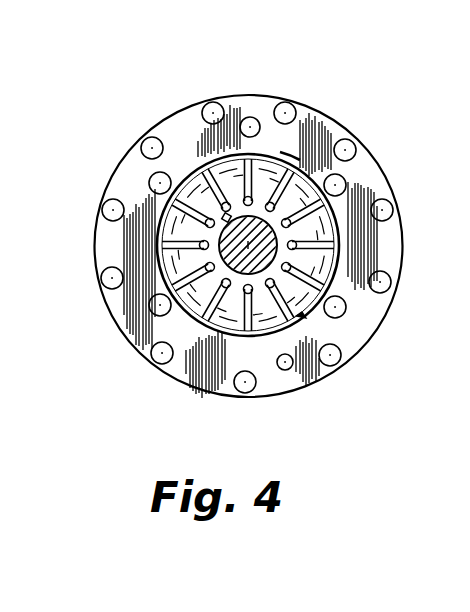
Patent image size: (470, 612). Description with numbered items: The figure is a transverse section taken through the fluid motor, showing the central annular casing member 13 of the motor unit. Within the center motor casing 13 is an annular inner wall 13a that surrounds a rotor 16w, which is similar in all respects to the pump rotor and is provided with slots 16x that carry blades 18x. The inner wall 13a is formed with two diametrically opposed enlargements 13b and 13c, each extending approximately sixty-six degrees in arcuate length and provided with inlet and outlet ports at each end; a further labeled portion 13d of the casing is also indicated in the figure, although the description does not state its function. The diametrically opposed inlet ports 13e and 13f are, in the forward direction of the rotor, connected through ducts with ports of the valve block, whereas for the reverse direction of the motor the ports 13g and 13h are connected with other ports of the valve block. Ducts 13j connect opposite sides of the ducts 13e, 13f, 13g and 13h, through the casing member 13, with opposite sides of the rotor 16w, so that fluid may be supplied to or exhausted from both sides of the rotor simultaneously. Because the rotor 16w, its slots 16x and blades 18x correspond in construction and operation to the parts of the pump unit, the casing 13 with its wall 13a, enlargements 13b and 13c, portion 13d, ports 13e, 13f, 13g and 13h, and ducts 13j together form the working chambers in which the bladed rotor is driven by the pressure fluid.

The central annular casing member 13 is at (258, 100).
The annular inner wall 13a is at (340, 236).
The enlargement 13b is at (243, 152).
The enlargement 13c is at (223, 337).
The hub ring edge 13d is at (280, 152).
The inlet port 13e is at (320, 176).
The inlet port 13f is at (187, 320).
The port 13g is at (192, 168).
The port 13h is at (303, 317).
The ducts 13j is at (148, 183).
The rotor 16w is at (173, 260).
The slots 16x is at (305, 317).
The blades 18x is at (277, 360).